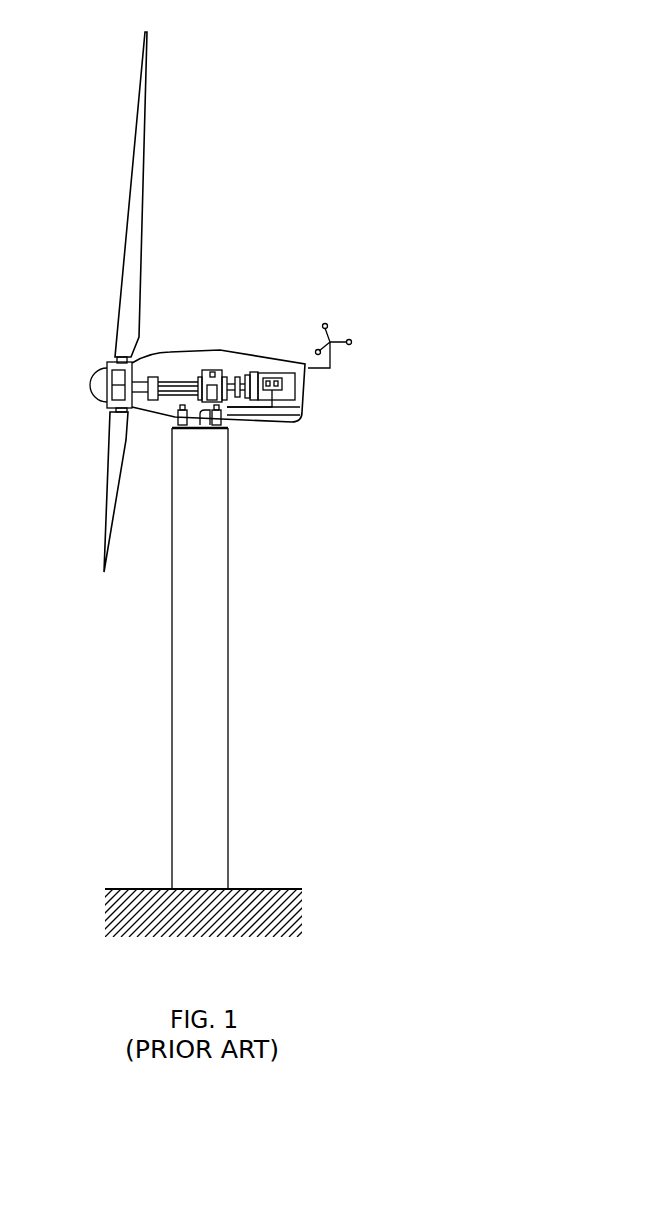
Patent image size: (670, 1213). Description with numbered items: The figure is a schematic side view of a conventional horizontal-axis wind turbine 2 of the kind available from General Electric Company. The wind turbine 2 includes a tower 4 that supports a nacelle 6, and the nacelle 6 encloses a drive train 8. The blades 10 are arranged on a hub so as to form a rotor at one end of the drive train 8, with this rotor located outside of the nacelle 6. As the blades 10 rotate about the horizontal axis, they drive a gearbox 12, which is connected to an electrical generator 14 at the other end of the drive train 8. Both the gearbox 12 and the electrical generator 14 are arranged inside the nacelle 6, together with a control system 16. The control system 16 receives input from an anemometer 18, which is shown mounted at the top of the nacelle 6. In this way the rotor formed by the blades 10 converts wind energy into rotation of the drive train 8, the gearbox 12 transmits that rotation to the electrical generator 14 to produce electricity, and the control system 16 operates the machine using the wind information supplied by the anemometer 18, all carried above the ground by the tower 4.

The wind turbine 2 is at (384, 192).
The tower 4 is at (212, 497).
The nacelle 6 is at (348, 390).
The drive train 8 is at (163, 380).
The blades 10 is at (125, 245).
The gearbox 12 is at (217, 368).
The electrical generator 14 is at (277, 374).
The control system 16 is at (243, 372).
The anemometer 18 is at (338, 340).